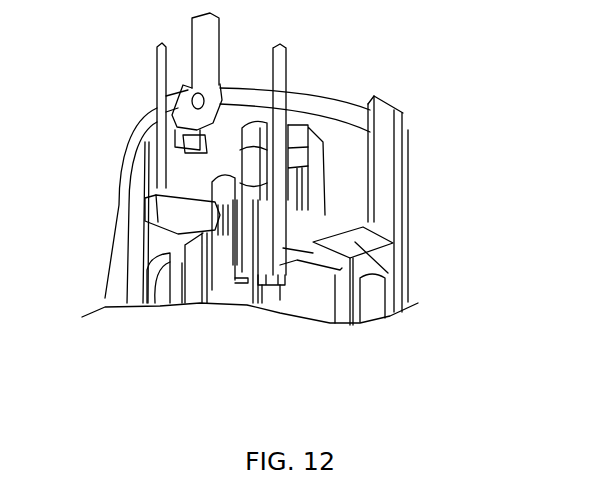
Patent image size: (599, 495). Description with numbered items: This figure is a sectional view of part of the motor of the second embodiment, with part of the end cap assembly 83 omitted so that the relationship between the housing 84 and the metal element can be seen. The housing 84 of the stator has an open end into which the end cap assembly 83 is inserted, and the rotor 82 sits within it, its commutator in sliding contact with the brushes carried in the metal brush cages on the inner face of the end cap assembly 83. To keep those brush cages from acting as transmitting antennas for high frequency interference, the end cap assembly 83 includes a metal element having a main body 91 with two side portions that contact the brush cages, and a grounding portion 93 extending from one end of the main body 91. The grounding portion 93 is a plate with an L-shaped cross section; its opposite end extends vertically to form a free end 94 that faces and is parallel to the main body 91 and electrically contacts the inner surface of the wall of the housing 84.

The rotor 82 is at (263, 287).
The end cap assembly 83 is at (142, 140).
The housing 84 is at (408, 164).
The main body 91 is at (313, 197).
The grounding portion 93 is at (400, 277).
The free end 94 is at (387, 168).